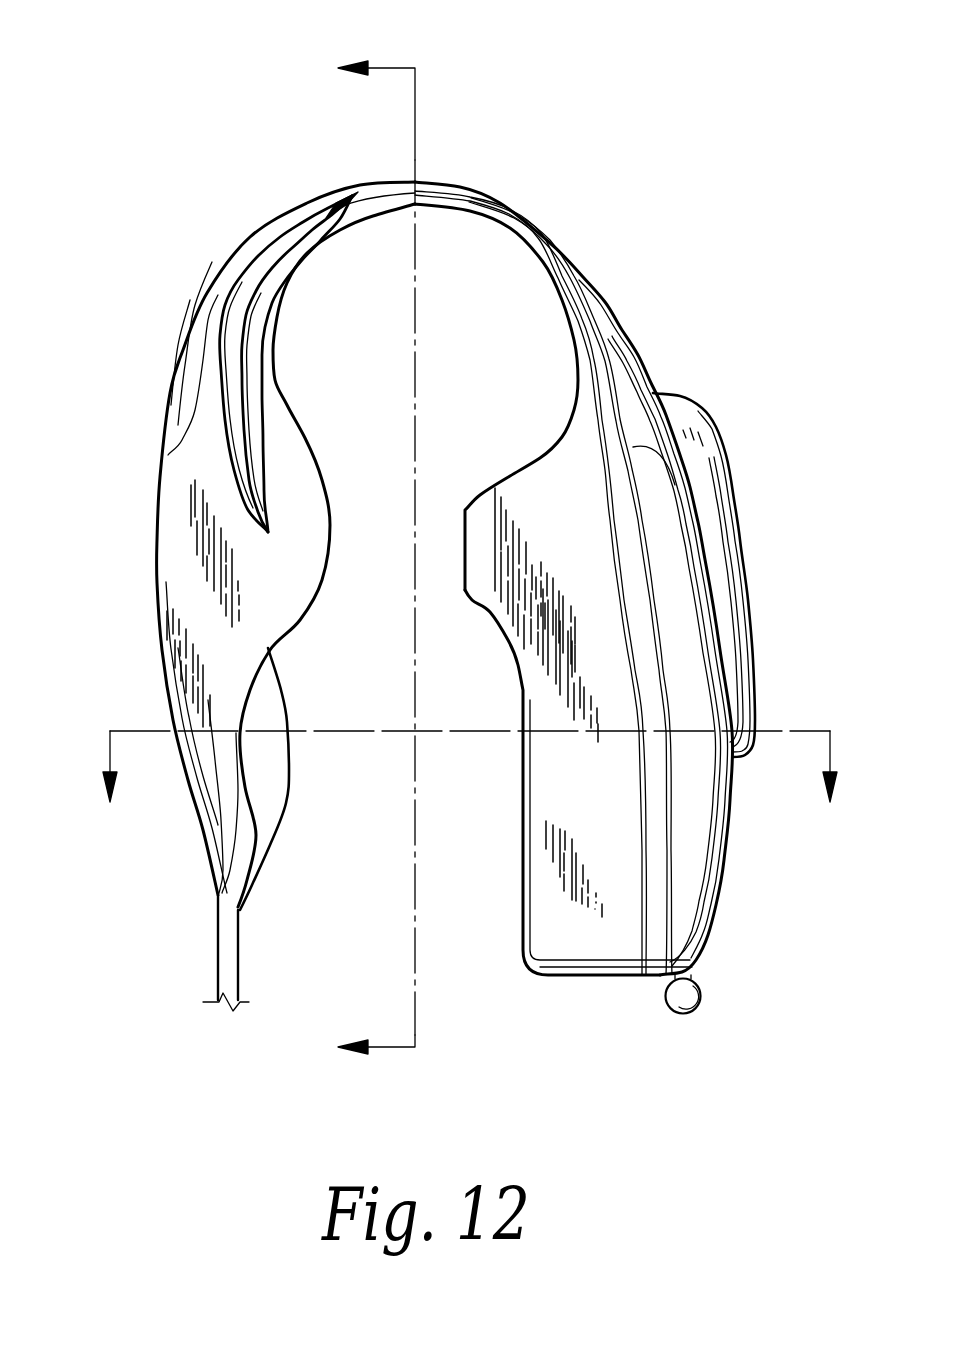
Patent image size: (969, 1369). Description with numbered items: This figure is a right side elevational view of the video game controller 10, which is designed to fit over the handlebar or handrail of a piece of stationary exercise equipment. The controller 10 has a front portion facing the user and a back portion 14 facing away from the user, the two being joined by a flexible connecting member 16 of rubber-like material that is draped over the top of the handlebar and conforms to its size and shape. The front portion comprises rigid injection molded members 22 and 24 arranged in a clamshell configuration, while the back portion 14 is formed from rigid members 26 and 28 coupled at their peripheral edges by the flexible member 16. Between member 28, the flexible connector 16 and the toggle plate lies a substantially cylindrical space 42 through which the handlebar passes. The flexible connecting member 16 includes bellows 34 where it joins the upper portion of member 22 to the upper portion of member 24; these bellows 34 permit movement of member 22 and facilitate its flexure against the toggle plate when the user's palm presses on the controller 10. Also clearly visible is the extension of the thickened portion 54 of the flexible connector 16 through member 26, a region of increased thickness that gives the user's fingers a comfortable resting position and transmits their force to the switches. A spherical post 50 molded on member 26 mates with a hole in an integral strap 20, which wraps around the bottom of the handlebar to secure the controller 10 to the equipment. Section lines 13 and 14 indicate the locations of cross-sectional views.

The controller 10 is at (226, 160).
The section line 13- 13 is at (403, 561).
The back portion 14 is at (466, 745).
The flexible connecting member 16 is at (498, 192).
The integral strap 20 is at (217, 966).
The member 22 is at (167, 393).
The member 24 is at (292, 800).
The member 26 is at (718, 905).
The member 28 is at (522, 900).
The bellows 34 is at (255, 300).
The cylindrical space 42 is at (507, 335).
The spherical post 50 is at (686, 1014).
The thickened portion 54 is at (688, 420).